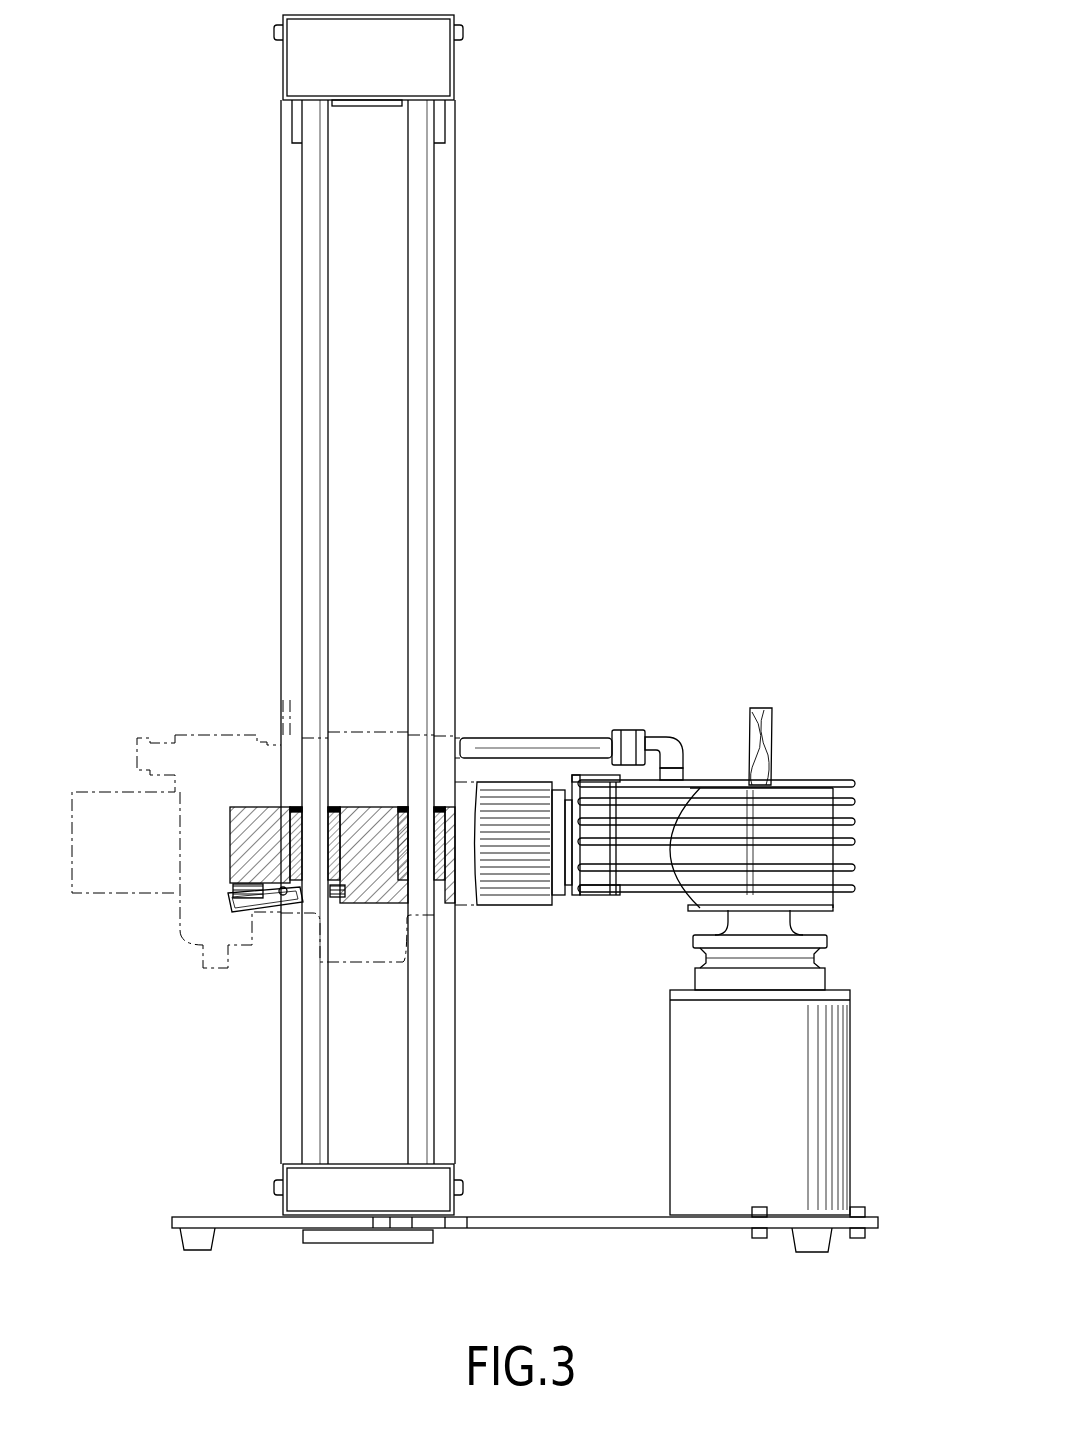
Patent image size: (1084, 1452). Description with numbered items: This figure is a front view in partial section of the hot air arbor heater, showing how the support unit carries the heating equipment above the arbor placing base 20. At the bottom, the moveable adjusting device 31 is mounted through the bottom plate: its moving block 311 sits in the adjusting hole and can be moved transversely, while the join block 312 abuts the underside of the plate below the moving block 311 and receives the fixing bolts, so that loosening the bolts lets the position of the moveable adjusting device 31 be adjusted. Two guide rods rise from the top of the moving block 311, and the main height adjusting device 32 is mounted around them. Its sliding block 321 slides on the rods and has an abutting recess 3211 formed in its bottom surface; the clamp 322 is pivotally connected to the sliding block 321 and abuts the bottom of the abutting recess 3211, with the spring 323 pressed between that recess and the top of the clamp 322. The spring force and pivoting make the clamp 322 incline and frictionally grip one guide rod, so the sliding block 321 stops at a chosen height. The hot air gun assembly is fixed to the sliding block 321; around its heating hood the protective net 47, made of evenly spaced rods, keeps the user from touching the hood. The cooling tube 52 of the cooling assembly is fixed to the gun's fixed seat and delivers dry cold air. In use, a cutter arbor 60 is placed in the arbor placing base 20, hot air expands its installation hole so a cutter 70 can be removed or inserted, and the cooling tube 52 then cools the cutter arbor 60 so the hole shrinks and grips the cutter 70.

The arbor placing base 20 is at (853, 1108).
The moveable adjusting device 31 is at (525, 657).
The moving block 311 is at (433, 1180).
The join block 312 is at (340, 1240).
The main height adjusting device 32 is at (286, 882).
The sliding block 321 is at (262, 822).
The abutting recess 3211 is at (338, 900).
The clamp 322 is at (232, 910).
The spring 323 is at (236, 887).
The protective net 47 is at (860, 818).
The cooling tube 52 is at (626, 730).
The cutter arbor 60 is at (827, 957).
The cutter 70 is at (776, 718).